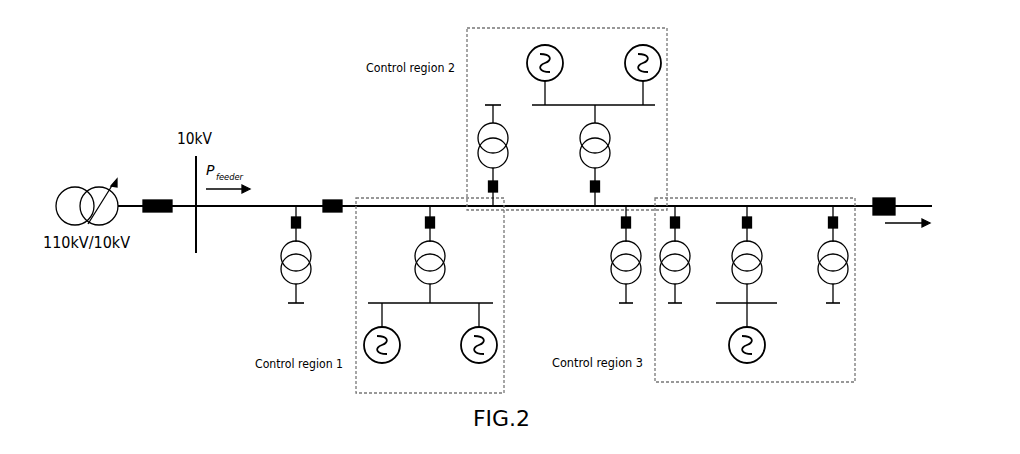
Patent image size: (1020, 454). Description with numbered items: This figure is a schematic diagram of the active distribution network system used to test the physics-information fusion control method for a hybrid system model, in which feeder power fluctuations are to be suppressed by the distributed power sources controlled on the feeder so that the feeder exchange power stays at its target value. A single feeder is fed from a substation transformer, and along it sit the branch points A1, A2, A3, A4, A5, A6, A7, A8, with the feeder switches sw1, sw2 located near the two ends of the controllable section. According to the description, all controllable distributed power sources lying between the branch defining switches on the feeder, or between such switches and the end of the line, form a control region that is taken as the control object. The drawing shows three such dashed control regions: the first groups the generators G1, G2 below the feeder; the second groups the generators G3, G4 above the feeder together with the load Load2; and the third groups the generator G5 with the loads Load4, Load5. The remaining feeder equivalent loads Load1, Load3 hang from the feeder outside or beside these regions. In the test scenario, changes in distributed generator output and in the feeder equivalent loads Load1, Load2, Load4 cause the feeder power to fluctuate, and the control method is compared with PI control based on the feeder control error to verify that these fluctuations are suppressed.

The feeder line segment switch / agent 1 A1 is at (295, 211).
The feeder line segment switch / agent 2 A2 is at (430, 241).
The feeder line segment switch / agent 3 A3 is at (507, 187).
The feeder line segment switch / agent 4 A4 is at (588, 155).
The feeder line segment switch / agent 5 A5 is at (624, 211).
The feeder line segment switch / agent 6 A6 is at (680, 211).
The feeder line segment switch / agent 7 A7 is at (747, 241).
The feeder line segment switch / agent 8 A8 is at (834, 211).
The switch 1 sw1 is at (334, 192).
The switch 2 sw2 is at (883, 193).
The generator 1 G1 is at (382, 346).
The generator 2 G2 is at (479, 346).
The generator 3 G3 is at (535, 72).
The generator 4 G4 is at (632, 72).
The generator 5 G5 is at (758, 337).
The feeder equivalent load Load1 is at (296, 284).
The feeder equivalent load Load2 is at (495, 126).
The load 3 Load3 is at (619, 286).
The feeder equivalent load Load4 is at (681, 285).
The load 5 Load5 is at (826, 285).